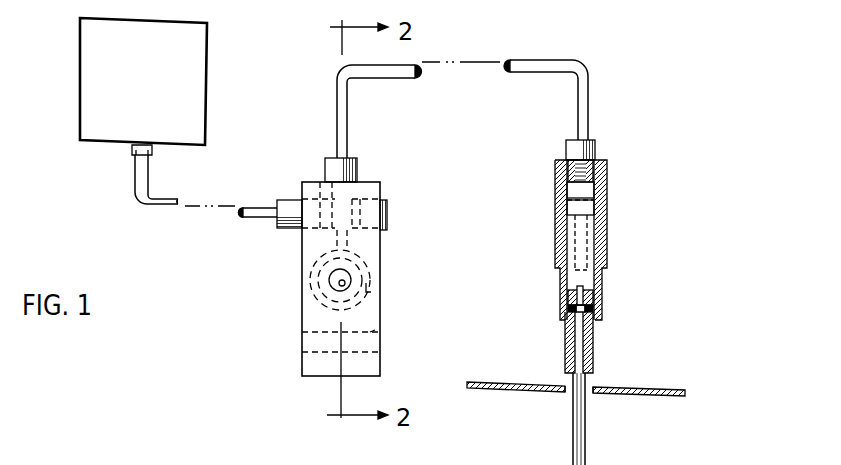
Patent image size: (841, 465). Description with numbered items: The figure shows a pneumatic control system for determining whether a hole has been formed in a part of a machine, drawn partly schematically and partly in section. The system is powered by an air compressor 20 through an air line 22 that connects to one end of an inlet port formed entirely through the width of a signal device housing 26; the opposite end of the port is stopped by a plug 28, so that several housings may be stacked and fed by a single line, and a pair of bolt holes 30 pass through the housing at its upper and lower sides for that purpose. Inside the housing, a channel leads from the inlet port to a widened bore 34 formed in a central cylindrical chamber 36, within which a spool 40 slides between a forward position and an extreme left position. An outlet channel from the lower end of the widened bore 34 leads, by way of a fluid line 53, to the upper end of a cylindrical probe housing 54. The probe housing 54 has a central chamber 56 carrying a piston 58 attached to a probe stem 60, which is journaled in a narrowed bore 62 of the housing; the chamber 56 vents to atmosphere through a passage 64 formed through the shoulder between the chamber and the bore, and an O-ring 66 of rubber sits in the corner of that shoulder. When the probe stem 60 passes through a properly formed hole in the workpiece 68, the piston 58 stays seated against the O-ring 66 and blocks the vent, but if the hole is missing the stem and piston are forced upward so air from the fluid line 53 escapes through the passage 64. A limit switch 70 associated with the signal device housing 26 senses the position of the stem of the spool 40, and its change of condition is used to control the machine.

The air compressor 20 is at (180, 128).
The air line 22 is at (250, 207).
The signal device housing 26 is at (310, 318).
The plug 28 is at (390, 208).
The bolt holes 30 is at (384, 325).
The widened bore 34 is at (368, 263).
The central cylindrical chamber 36 is at (374, 289).
The spool 40 is at (376, 273).
The fluid line 53 is at (522, 61).
The probe housing 54 is at (606, 229).
The central chamber 56 is at (608, 192).
The piston 58 is at (565, 300).
The probe stem 60 is at (587, 425).
The narrowed bore 62 is at (596, 350).
The passage 64 is at (598, 313).
The O-ring 66 is at (568, 311).
The workpiece 68 is at (527, 392).
The limit switch 70 is at (571, 392).